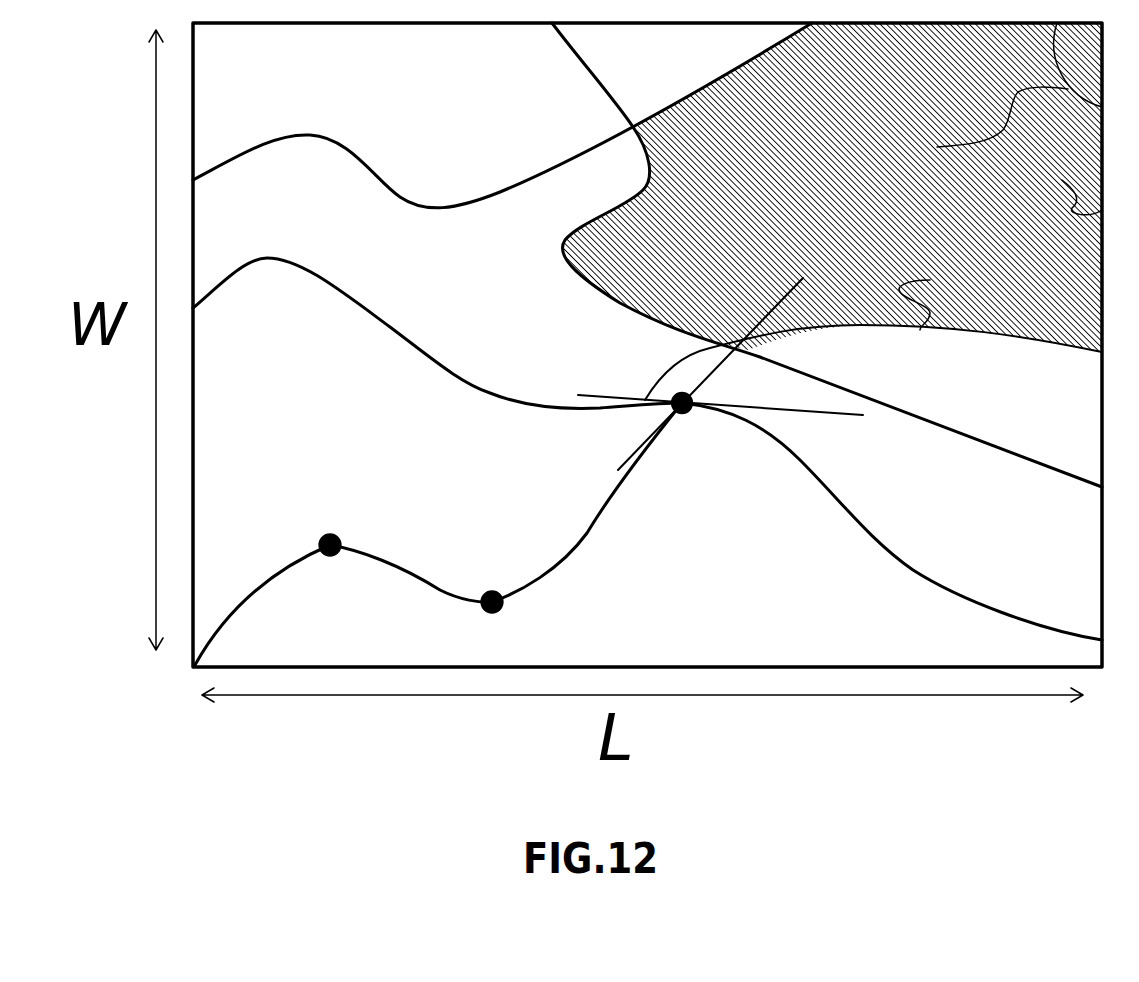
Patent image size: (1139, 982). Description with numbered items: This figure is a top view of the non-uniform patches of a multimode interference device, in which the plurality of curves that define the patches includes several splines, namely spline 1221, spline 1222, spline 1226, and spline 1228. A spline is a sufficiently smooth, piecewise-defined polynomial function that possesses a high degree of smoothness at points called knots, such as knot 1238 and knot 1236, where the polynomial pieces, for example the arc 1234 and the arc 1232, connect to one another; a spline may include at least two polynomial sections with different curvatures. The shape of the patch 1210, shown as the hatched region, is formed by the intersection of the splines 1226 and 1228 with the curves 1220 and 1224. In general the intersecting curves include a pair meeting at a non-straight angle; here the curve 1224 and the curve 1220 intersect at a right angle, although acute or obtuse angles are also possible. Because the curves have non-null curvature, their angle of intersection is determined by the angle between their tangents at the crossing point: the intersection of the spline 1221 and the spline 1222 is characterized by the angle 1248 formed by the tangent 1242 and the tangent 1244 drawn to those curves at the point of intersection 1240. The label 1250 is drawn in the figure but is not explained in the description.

The patch 1210 is at (893, 228).
The curve 1220 is at (1048, 187).
The spline 1221 is at (325, 275).
The spline 1222 is at (941, 299).
The curve 1224 is at (1000, 23).
The spline 1226 is at (722, 82).
The spline 1228 is at (650, 173).
The arc 1232 is at (417, 573).
The arc 1234 is at (283, 560).
The knot 1236 is at (500, 615).
The knot 1238 is at (338, 540).
The point of intersection 1240 is at (692, 412).
The tangent 1242 is at (597, 396).
The tangent 1244 is at (636, 452).
The angle 1248 is at (657, 398).
The region feature 1250 is at (977, 119).